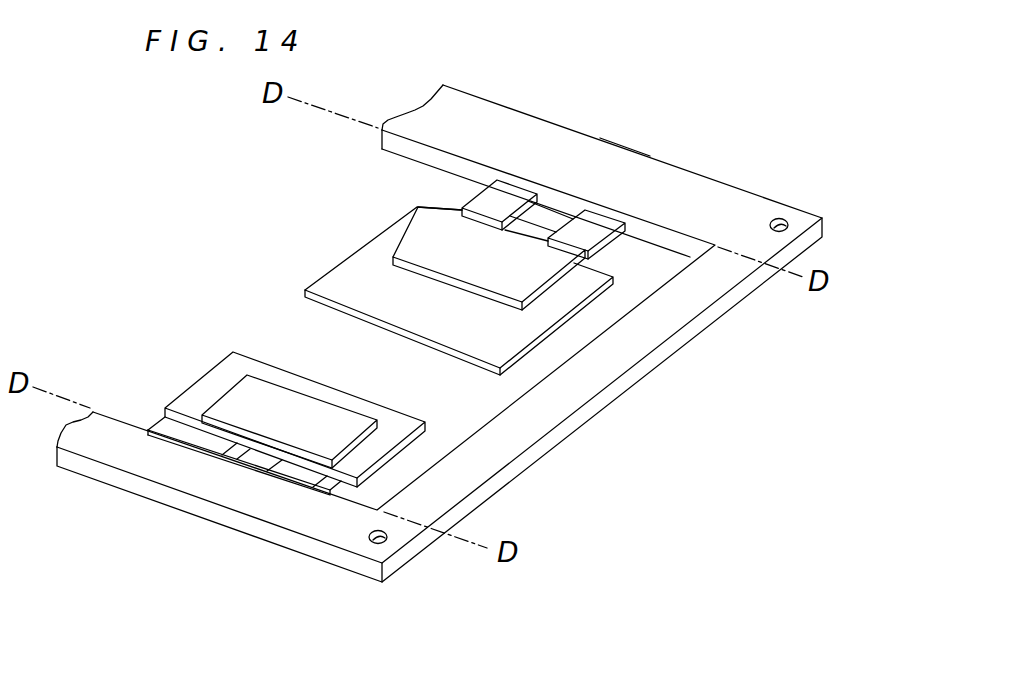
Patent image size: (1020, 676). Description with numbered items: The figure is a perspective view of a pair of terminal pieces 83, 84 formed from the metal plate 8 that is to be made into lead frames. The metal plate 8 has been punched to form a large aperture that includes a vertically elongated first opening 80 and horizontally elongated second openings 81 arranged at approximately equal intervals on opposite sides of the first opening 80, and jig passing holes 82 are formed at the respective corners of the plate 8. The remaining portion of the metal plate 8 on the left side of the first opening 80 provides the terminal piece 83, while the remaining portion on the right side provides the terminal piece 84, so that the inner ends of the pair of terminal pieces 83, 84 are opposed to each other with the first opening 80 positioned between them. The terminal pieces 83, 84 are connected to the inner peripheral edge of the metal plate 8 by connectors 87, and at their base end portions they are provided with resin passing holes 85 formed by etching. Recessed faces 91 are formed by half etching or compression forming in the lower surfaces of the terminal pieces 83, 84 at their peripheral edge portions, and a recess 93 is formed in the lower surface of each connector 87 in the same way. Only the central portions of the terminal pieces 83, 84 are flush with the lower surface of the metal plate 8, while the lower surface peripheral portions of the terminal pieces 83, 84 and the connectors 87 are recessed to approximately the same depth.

The metal plate 8 is at (585, 148).
The first opening 80 is at (411, 414).
The second openings 81 is at (552, 332).
The jig passing holes 82 is at (787, 223).
The terminal piece 83 is at (427, 262).
The terminal piece 84 is at (243, 397).
The resin passing holes 85 is at (530, 232).
The connector 87 is at (480, 197).
The recessed faces 91 is at (335, 286).
The recess 93 is at (596, 236).